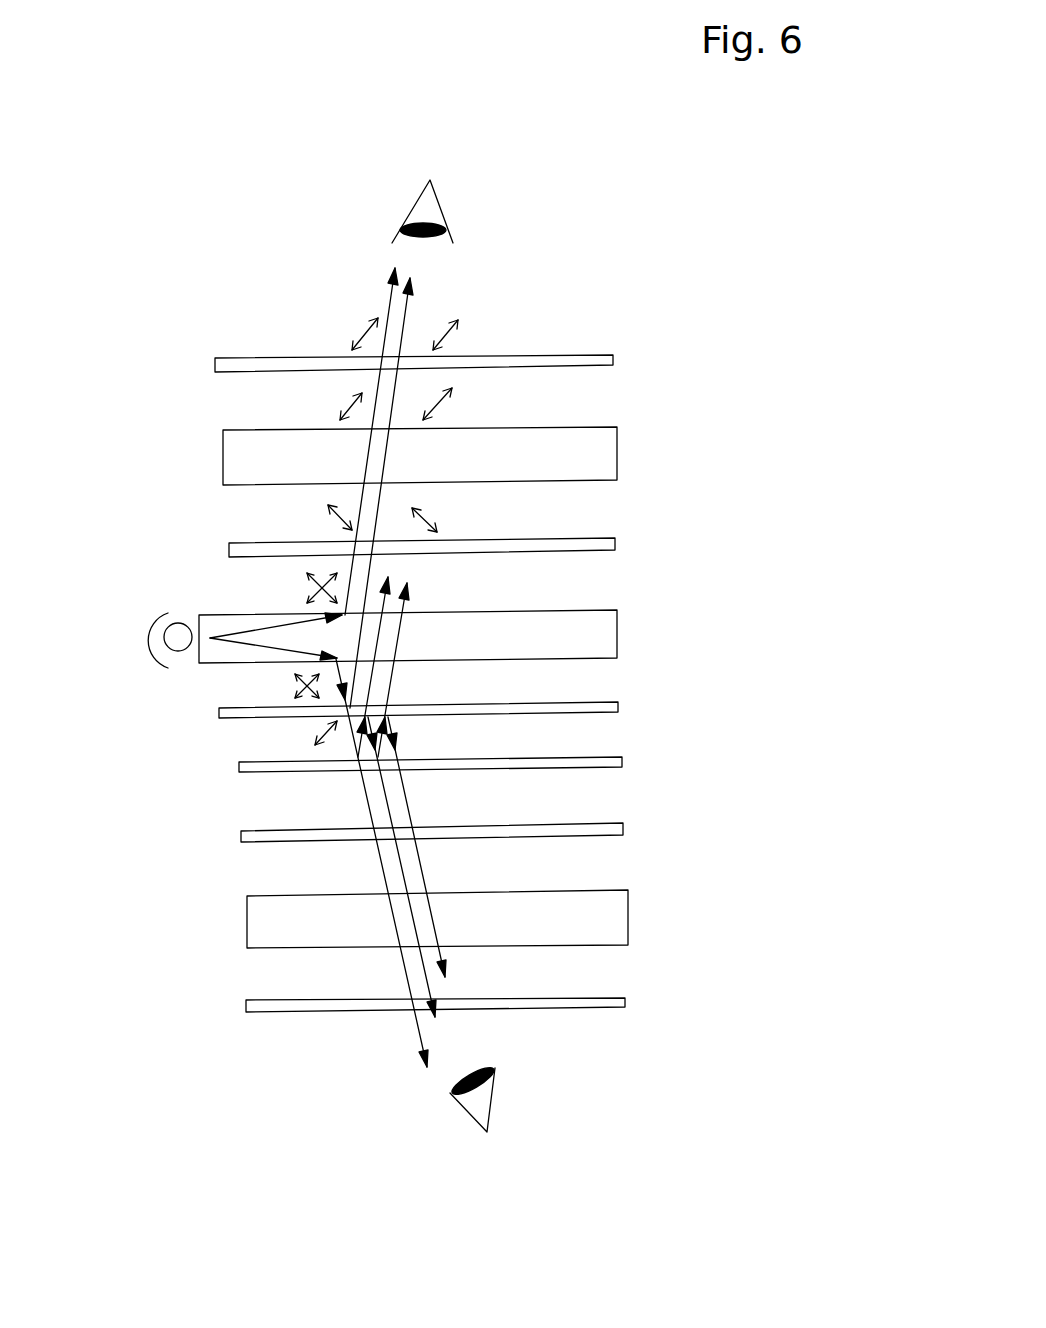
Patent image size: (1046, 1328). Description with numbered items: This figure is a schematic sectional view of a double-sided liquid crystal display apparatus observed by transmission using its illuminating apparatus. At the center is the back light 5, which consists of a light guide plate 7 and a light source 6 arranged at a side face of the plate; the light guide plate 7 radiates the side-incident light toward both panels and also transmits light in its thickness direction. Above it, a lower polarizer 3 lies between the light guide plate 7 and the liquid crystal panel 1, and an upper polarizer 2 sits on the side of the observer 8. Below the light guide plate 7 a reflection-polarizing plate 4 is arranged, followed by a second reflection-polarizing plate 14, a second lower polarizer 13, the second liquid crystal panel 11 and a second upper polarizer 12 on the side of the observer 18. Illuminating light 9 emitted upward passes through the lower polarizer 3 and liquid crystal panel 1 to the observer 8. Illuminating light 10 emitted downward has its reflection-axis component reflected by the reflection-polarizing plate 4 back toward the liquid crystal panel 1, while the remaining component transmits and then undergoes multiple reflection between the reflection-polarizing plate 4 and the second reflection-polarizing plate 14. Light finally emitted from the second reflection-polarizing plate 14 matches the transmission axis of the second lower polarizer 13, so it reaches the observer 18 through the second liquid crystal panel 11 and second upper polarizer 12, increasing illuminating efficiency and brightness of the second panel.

The liquid crystal panel 1 is at (593, 457).
The upper polarizer 2 is at (603, 359).
The lower polarizer 3 is at (592, 545).
The reflection-polarizing plate 4 is at (613, 702).
The back light 5 is at (142, 643).
The light source 6 is at (157, 622).
The light guide plate 7 is at (593, 625).
The observer 8 is at (437, 205).
The illuminating light 9 is at (225, 632).
The illuminating light 10 is at (262, 652).
The second liquid crystal panel 11 is at (603, 917).
The second upper polarizer 12 is at (615, 1000).
The second lower polarizer 13 is at (623, 823).
The second reflection-polarizing plate 14 is at (622, 757).
The observer 18 is at (468, 1113).